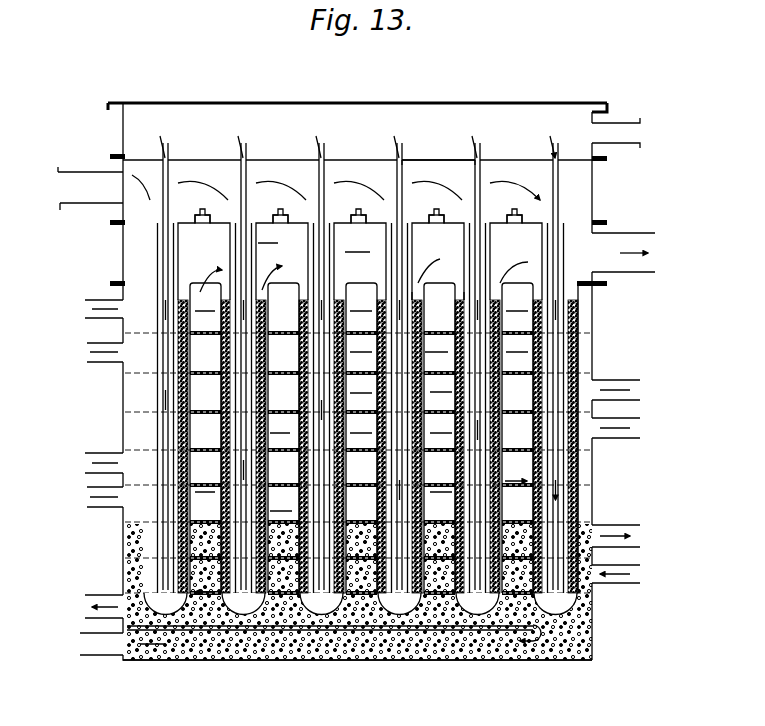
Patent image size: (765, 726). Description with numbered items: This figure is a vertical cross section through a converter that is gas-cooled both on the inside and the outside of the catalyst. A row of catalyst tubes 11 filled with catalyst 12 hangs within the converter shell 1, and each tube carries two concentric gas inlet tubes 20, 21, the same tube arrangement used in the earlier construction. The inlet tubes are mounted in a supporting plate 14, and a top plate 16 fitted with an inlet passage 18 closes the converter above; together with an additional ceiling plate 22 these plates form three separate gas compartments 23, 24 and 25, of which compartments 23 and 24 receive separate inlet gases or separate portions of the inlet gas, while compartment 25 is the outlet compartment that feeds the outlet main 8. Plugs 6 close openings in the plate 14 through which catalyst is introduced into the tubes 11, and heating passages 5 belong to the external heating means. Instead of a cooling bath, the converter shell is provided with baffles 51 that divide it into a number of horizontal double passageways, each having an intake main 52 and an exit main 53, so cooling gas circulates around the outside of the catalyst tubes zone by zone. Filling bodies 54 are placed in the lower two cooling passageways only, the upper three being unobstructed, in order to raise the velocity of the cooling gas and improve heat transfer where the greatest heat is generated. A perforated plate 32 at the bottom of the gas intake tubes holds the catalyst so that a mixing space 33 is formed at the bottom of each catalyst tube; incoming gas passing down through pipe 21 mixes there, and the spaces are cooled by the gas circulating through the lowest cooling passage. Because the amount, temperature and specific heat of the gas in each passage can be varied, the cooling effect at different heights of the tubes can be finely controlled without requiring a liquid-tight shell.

The converter shell 1 is at (120, 432).
The heating passages 5 is at (211, 274).
The plugs 6 is at (510, 215).
The outlet main 8 is at (631, 252).
The catalyst tubes 11 is at (190, 300).
The catalyst 12 is at (146, 398).
The supporting plate 14 is at (210, 222).
The top plate 16 is at (243, 106).
The inlet passage 18 is at (629, 133).
The gas inlet tube 20 is at (178, 245).
The gas inlet tube 21 is at (170, 171).
The ceiling plate 22 is at (232, 150).
The gas compartment 23 is at (438, 142).
The gas compartment 24 is at (438, 171).
The outlet compartment 25 is at (438, 267).
The perforated plate 32 is at (580, 604).
The mixing space 33 is at (570, 614).
The baffles 51 is at (108, 537).
The intake main 52 is at (358, 499).
The exit main 53 is at (358, 456).
The filling bodies 54 is at (590, 661).